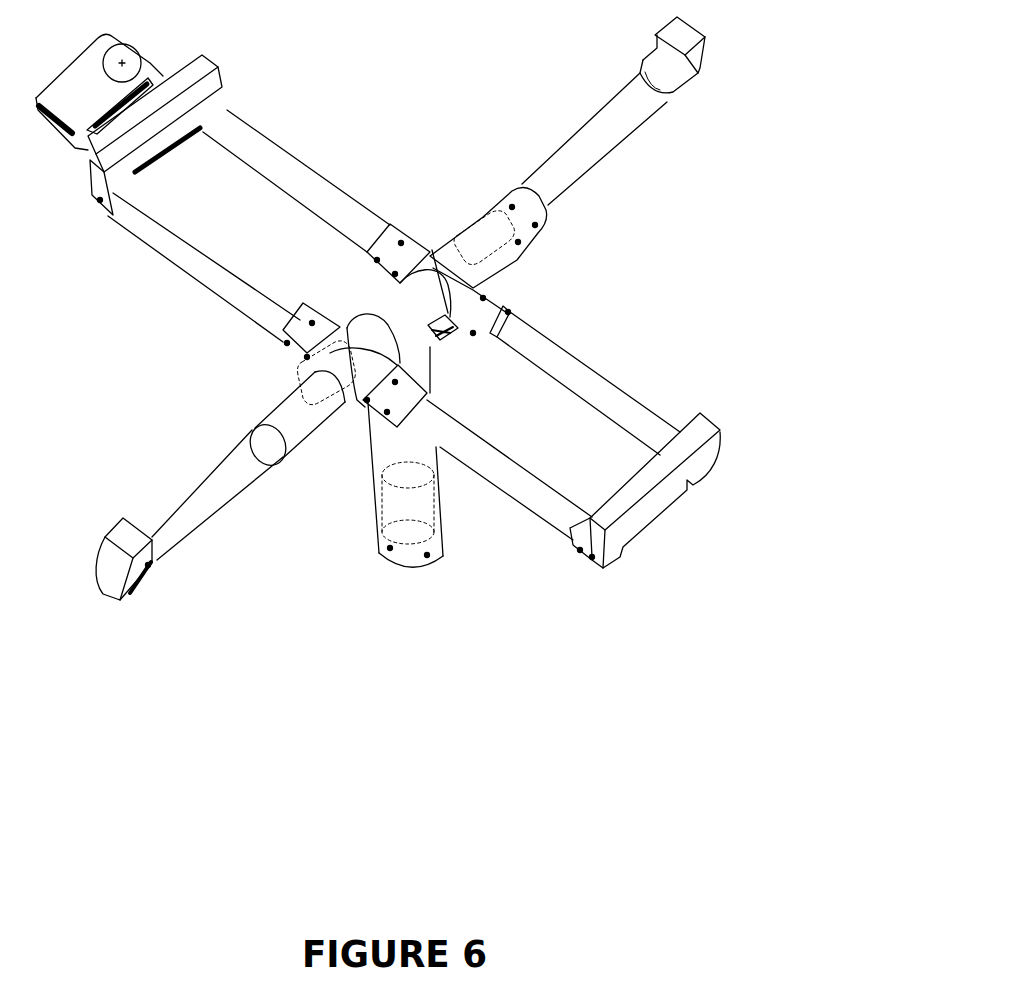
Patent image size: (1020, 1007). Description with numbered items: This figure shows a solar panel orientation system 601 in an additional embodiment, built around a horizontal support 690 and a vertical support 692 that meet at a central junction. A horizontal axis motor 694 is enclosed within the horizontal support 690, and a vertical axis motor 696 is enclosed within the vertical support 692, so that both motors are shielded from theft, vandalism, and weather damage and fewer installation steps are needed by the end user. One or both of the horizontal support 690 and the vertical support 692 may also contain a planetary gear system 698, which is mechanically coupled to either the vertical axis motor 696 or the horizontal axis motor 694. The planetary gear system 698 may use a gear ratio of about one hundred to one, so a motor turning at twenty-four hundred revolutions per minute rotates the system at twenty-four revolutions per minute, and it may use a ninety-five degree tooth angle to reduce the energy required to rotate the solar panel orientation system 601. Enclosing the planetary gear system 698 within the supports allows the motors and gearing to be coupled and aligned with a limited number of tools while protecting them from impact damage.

The solar panel orientation system 601 is at (392, 405).
The horizontal support 690 is at (570, 153).
The vertical support 692 is at (385, 447).
The horizontal axis motor 694 is at (490, 240).
The vertical axis motor 696 is at (415, 508).
The planetary gear system 698 is at (330, 390).